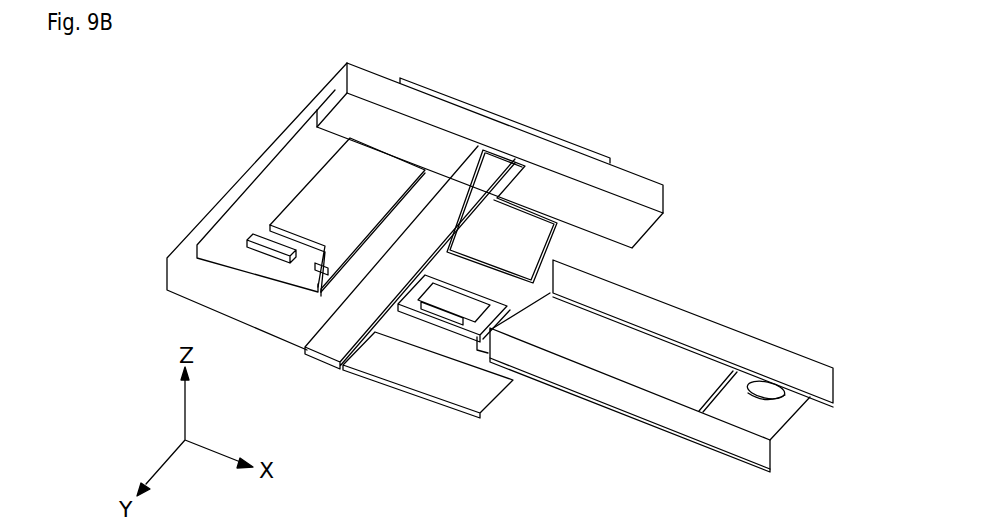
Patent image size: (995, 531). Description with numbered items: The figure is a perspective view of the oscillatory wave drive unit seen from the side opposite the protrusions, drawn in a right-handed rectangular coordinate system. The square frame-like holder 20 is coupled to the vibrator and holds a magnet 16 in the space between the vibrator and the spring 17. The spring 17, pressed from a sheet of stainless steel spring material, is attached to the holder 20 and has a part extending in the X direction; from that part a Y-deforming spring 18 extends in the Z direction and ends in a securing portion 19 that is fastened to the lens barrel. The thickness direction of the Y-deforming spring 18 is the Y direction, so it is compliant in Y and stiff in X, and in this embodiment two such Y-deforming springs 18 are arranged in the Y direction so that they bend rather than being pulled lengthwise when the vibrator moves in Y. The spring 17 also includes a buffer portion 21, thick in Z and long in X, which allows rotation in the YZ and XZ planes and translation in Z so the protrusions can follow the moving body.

The magnet 16 is at (375, 247).
The spring 17 is at (354, 333).
The Y-deforming spring 18 is at (680, 327).
The securing portion 19 is at (778, 415).
The holder 20 is at (347, 115).
The buffer portion 21 is at (478, 278).